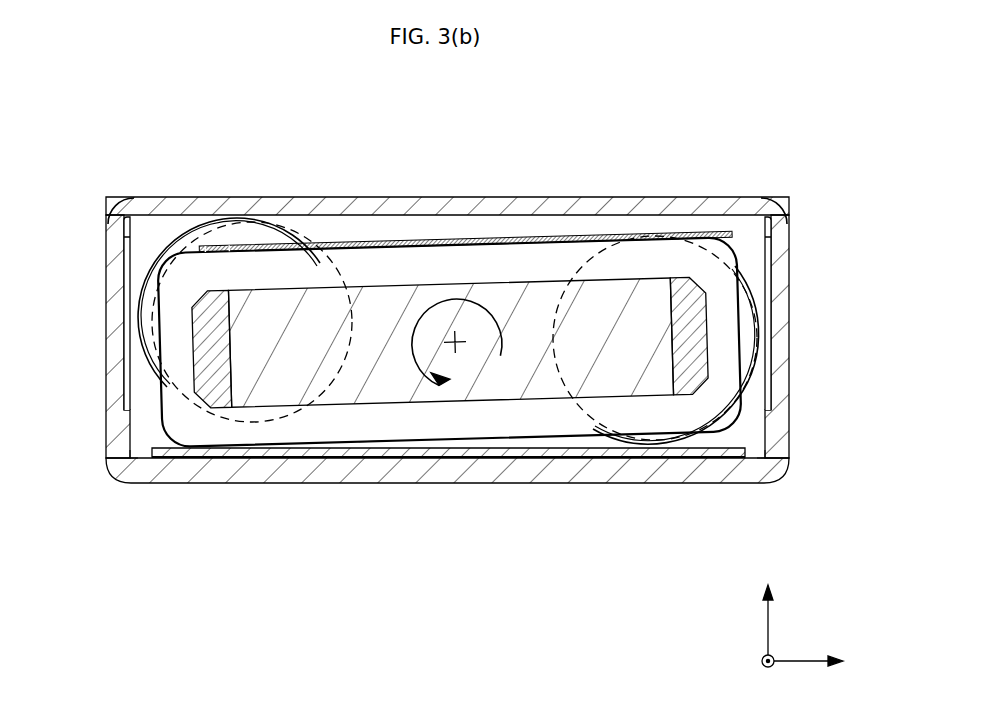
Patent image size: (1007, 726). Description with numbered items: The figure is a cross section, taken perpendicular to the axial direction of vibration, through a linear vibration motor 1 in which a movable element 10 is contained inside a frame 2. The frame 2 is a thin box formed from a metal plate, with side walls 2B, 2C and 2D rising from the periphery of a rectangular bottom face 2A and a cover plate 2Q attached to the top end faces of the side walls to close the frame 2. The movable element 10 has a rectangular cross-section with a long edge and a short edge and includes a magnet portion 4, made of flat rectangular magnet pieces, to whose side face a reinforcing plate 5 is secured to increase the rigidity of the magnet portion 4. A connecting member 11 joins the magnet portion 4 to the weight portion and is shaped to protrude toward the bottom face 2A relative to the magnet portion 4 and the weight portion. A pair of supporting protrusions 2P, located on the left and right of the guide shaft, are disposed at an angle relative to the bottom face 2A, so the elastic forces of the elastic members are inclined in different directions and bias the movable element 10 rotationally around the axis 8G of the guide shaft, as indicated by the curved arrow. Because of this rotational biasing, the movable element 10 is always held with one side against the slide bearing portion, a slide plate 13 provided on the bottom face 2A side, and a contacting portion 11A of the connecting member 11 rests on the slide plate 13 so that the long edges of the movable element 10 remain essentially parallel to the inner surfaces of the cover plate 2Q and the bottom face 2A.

The linear vibration motor 1 is at (629, 116).
The frame 2 is at (498, 486).
The bottom face 2A is at (714, 452).
The side wall 2B is at (129, 258).
The side wall 2C is at (107, 283).
The side wall 2D is at (789, 273).
The supporting protrusion 2P is at (183, 222).
The cover plate 2Q is at (640, 197).
The magnet portion 4 is at (264, 290).
The reinforcing plate 5 is at (193, 340).
The axis of the guide shaft 8G is at (463, 335).
The movable element 10 is at (438, 236).
The connecting member 11 is at (558, 250).
The contacting portion 11A is at (183, 457).
The slide plate 13 is at (381, 462).